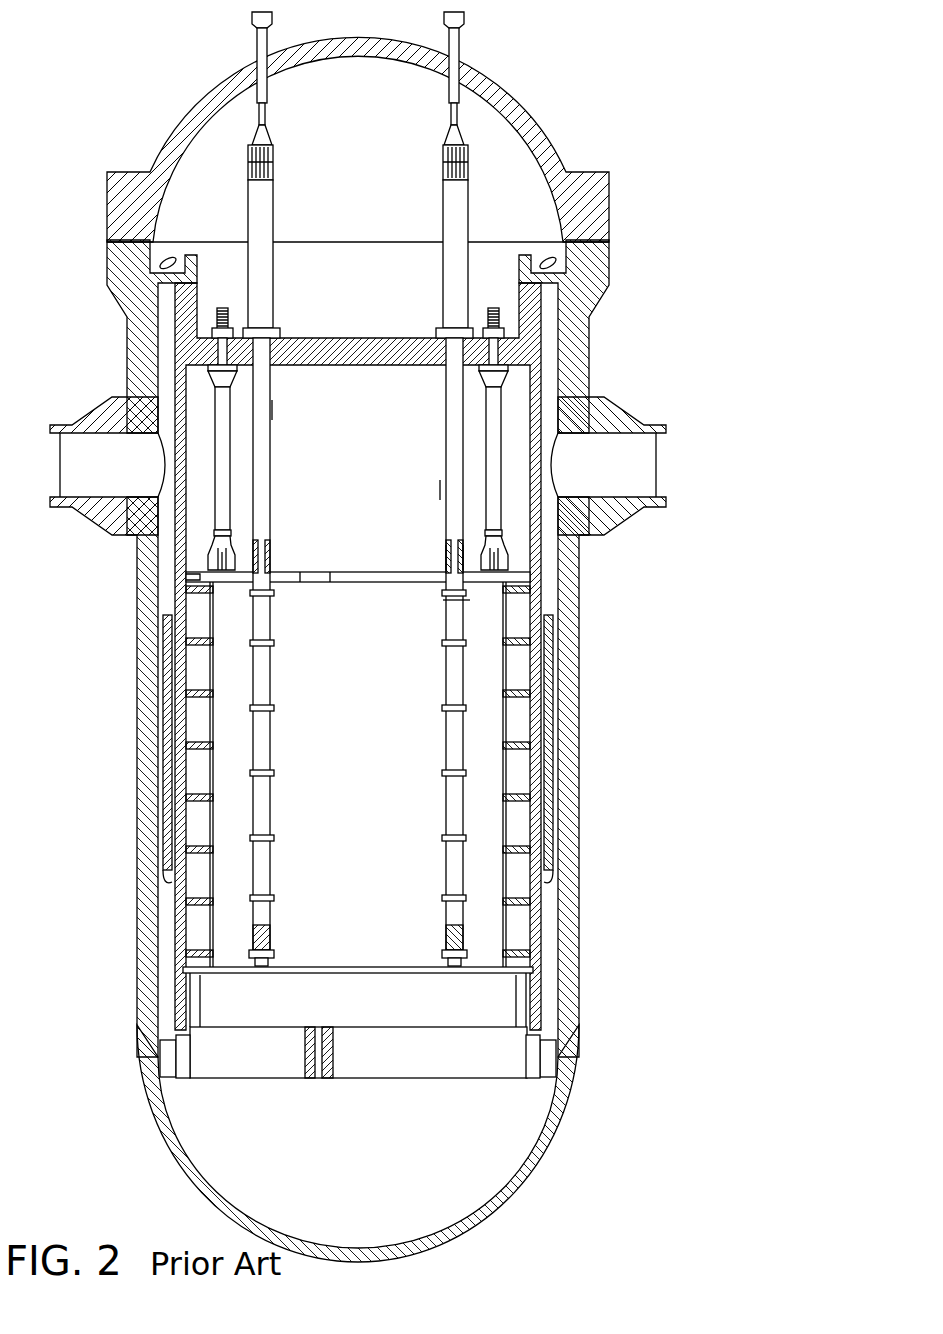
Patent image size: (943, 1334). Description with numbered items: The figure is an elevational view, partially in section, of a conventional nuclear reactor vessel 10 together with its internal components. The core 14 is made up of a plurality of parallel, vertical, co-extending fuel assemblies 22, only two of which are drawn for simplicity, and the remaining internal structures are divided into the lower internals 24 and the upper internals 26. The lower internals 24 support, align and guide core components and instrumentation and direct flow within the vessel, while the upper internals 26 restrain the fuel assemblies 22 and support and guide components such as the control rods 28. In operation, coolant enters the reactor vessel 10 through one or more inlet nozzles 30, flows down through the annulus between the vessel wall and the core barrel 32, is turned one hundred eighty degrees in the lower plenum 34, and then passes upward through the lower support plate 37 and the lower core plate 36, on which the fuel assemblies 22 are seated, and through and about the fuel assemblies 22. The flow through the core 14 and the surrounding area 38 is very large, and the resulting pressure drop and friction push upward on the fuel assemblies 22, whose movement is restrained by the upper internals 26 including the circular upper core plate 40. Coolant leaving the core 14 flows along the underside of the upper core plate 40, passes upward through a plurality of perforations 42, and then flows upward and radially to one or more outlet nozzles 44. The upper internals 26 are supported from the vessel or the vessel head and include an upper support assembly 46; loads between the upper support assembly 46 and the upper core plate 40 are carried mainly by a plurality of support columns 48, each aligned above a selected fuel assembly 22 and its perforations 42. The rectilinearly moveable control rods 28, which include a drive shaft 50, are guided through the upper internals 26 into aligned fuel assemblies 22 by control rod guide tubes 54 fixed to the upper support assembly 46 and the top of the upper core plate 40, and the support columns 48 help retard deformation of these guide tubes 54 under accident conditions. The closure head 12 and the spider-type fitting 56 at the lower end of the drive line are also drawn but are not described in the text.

The reactor vessel 10 is at (582, 652).
The closure head 12 is at (610, 217).
The core 14 is at (363, 753).
The fuel assemblies 22 is at (272, 678).
The lower internals 24 is at (358, 1000).
The upper internals 26 is at (363, 428).
The control rods 28 is at (452, 603).
The inlet nozzles 30 is at (88, 410).
The core barrel 32 is at (178, 570).
The lower plenum 34 is at (528, 1125).
The lower core plate 36 is at (418, 964).
The lower support plate 37 is at (402, 1065).
The surrounding area 38 is at (412, 740).
The upper core plate 40 is at (368, 582).
The perforations 42 is at (315, 575).
The outlet nozzles 44 is at (632, 417).
The upper support assembly 46 is at (528, 250).
The support columns 48 is at (462, 418).
The drive shaft 50 is at (445, 548).
The control rod guide tubes 54 is at (272, 412).
The rod cluster spider 56 is at (468, 600).